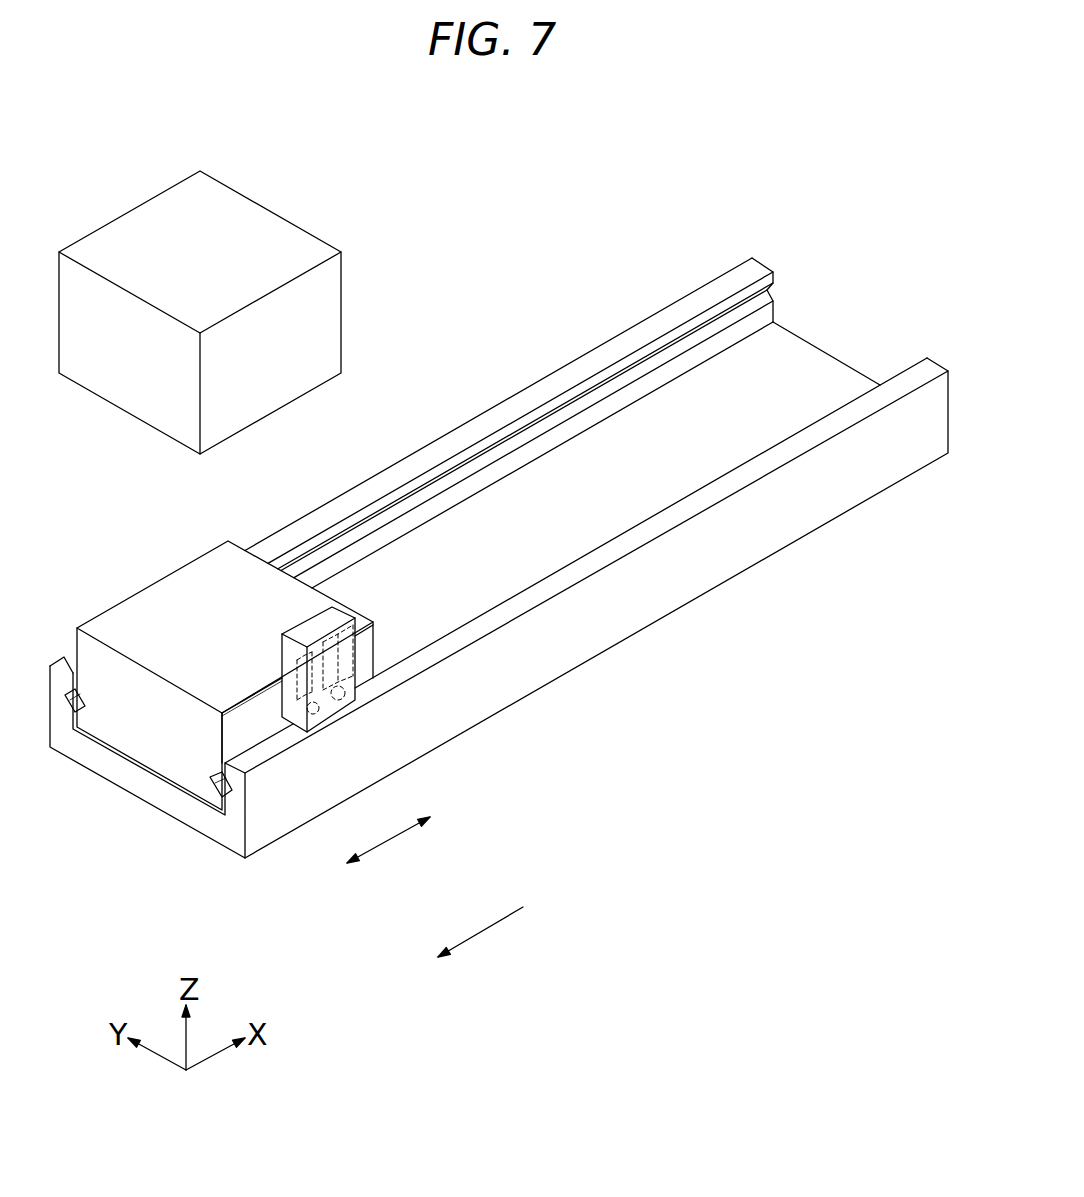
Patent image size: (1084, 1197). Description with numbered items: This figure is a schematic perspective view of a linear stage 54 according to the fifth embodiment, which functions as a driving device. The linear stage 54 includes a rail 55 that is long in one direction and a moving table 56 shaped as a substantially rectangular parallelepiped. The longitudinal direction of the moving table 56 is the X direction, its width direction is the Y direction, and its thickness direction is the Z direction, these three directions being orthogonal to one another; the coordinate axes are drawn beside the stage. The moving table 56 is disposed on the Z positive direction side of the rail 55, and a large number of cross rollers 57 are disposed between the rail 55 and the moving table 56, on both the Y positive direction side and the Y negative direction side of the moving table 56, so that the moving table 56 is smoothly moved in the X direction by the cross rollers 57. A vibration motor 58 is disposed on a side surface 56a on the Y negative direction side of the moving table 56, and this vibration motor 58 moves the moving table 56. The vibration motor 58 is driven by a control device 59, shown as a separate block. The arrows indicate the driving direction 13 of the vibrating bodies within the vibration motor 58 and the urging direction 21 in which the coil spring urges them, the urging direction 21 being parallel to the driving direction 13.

The linear stage 54 is at (821, 154).
The rail 55 is at (450, 718).
The moving table 56 is at (132, 620).
The side surface 56a is at (237, 732).
The cross rollers 57 is at (68, 705).
The vibration motor 58 is at (330, 623).
The control device 59 is at (132, 228).
The driving direction 13 is at (390, 843).
The urging direction 21 is at (488, 932).